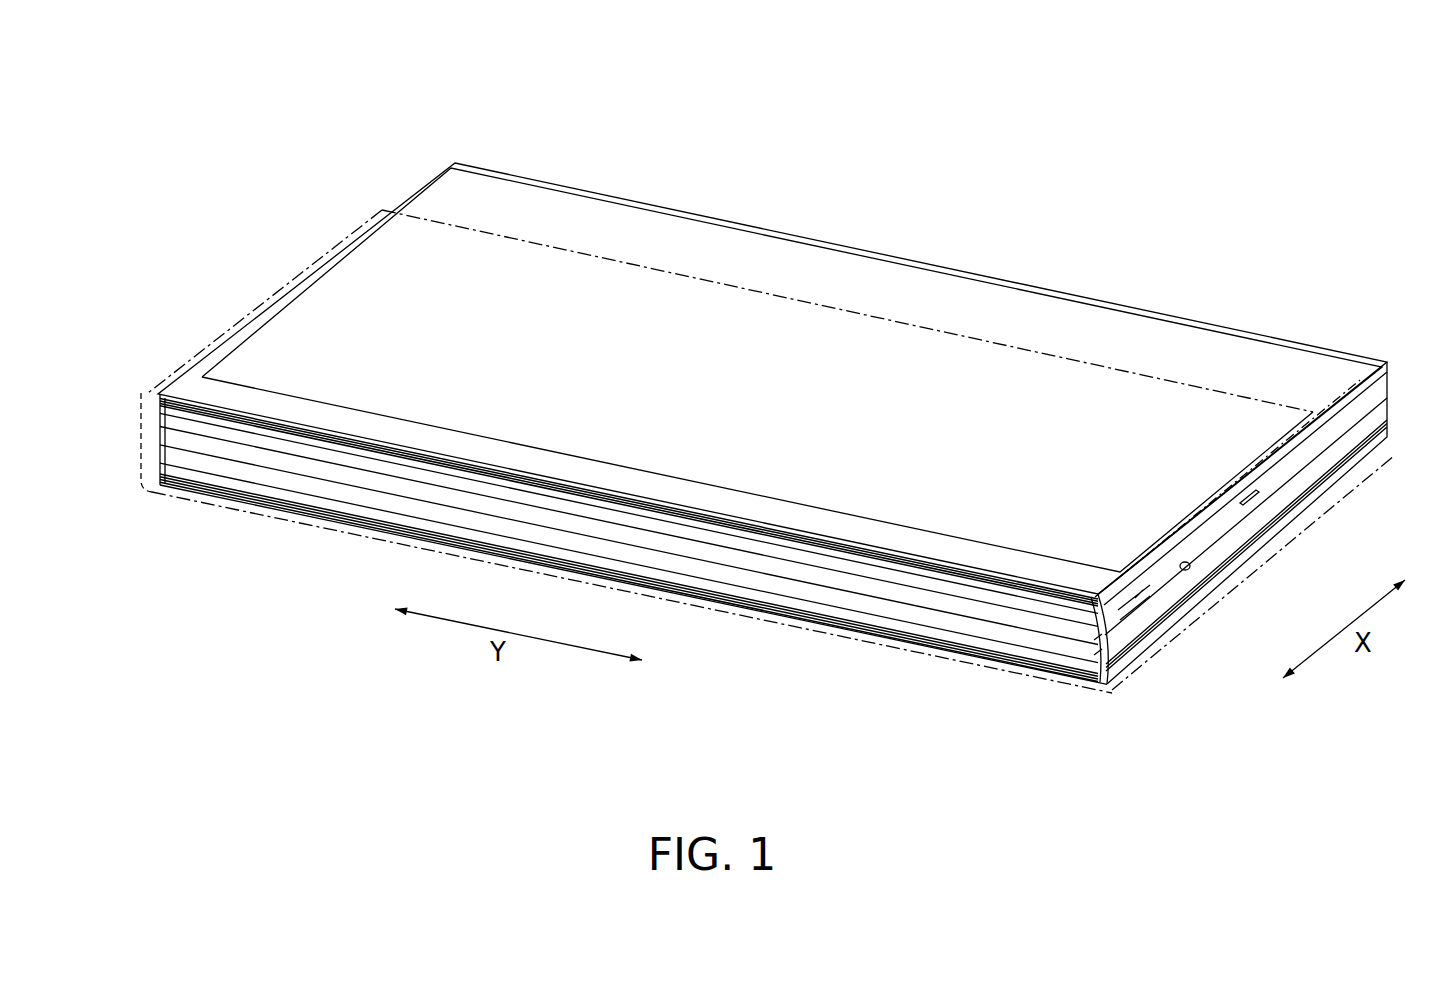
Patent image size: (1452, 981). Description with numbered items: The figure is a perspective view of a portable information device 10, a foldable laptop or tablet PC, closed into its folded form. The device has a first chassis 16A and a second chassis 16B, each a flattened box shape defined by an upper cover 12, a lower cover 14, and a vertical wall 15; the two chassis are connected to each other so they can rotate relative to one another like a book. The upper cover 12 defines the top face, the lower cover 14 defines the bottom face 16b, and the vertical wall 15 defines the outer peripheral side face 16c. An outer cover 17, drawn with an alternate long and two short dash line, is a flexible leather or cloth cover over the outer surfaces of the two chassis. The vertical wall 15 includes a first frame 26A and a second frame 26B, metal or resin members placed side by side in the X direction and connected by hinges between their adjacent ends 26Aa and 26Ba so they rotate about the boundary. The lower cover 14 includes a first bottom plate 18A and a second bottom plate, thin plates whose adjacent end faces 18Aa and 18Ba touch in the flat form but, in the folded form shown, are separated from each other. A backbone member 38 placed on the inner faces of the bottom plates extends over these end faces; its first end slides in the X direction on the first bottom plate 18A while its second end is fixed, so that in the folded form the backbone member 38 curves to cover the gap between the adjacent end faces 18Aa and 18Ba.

The portable information device 10 is at (214, 246).
The upper cover 12 is at (1397, 378).
The lower cover 14 is at (369, 302).
The vertical wall 15 is at (1337, 444).
The first chassis 16A is at (980, 309).
The second chassis 16B is at (1381, 447).
The bottom face 16b is at (465, 268).
The outer peripheral side face 16c is at (749, 543).
The outer cover 17 is at (537, 235).
The first bottom plate 18A is at (629, 349).
The adjacent end face of the first bottom plate 18Aa is at (242, 420).
The adjacent end face of the second bottom plate 18Ba is at (273, 500).
The first frame 26A is at (1155, 572).
The adjacent end of the first frame 26Aa is at (1107, 625).
The second frame 26B is at (1212, 567).
The adjacent end of the second frame 26Ba is at (1088, 670).
The backbone member 38 is at (792, 592).